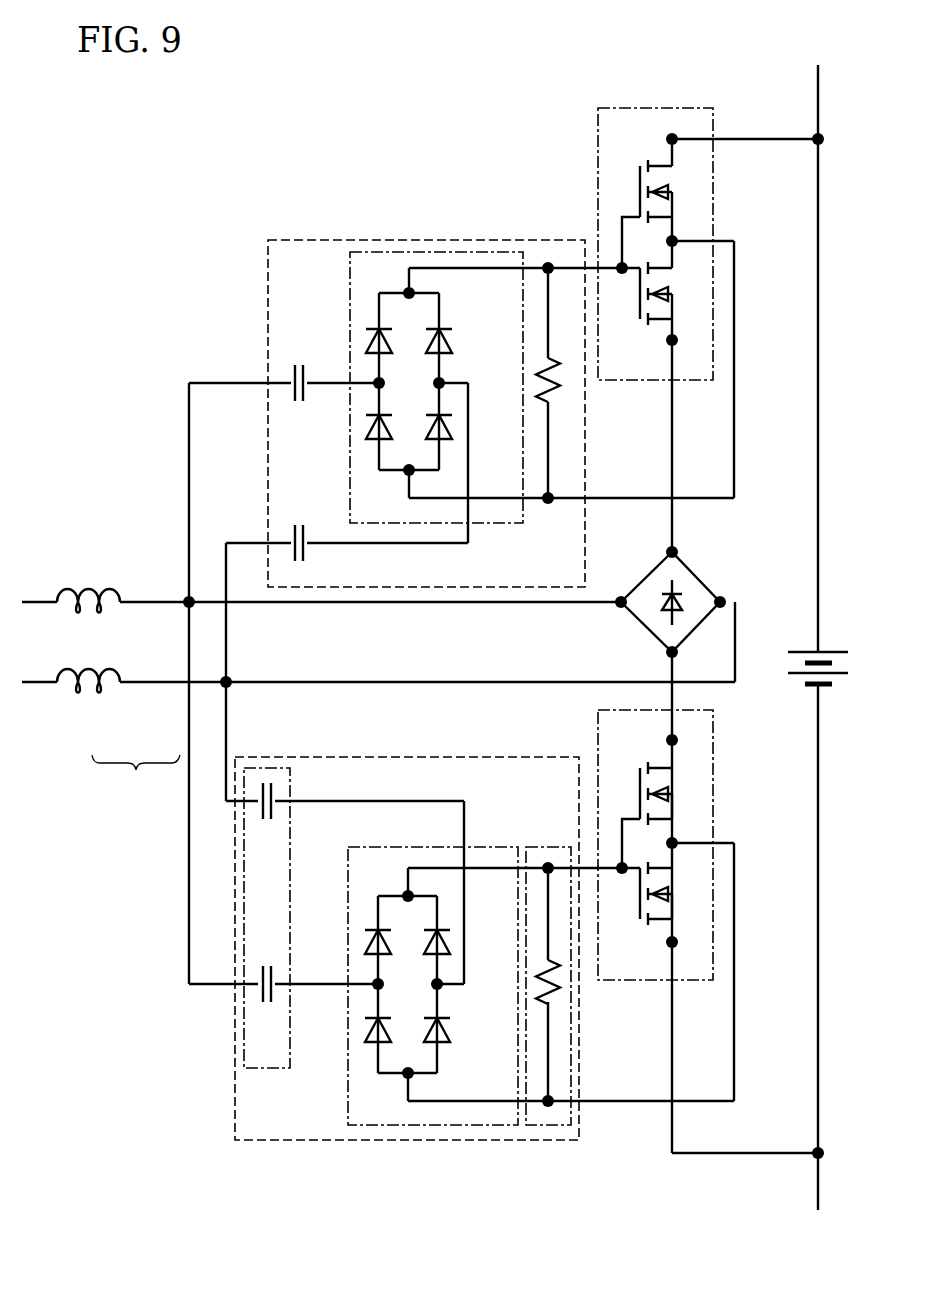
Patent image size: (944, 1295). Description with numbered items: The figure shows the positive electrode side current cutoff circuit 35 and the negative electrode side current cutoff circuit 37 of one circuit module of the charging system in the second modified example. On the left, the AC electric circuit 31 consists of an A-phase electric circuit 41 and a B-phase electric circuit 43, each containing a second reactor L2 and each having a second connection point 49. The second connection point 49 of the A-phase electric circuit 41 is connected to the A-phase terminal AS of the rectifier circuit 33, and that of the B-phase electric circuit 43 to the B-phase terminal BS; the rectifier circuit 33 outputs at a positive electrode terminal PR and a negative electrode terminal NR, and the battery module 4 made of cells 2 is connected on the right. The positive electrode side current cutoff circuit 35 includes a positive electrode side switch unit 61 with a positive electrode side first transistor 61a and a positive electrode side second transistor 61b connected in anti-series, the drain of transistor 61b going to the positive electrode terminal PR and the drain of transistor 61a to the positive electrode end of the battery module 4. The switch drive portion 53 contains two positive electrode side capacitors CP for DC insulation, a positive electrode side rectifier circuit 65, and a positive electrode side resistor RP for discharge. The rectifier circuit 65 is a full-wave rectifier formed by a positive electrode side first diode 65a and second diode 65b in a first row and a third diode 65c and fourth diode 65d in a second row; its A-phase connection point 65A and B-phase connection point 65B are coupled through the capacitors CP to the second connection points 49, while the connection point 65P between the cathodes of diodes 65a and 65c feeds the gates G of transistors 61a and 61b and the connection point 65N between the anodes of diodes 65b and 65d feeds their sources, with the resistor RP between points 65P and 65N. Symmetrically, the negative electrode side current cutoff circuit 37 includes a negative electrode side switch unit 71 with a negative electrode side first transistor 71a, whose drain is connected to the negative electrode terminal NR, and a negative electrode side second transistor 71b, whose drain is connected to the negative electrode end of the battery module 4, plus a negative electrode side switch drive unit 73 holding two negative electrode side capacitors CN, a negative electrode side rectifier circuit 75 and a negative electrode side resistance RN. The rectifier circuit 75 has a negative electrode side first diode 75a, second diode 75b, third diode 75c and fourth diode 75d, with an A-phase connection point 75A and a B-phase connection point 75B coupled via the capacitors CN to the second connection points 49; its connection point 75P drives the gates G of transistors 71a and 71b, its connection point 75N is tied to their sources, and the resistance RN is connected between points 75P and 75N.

The cell 2 is at (850, 672).
The battery module 4 is at (822, 598).
The AC electric circuit 31 is at (136, 778).
The rectifier circuit 33 is at (707, 573).
The positive electrode side current cutoff circuit 35 is at (186, 153).
The negative electrode side current cutoff circuit 37 is at (244, 1153).
The A-phase electric circuit 41 is at (135, 612).
The B-phase electric circuit 43 is at (163, 690).
The second connection point 49 is at (189, 600).
The positive-side rectifier circuit 53 is at (264, 267).
The positive electrode side switch unit 61 is at (713, 126).
The positive electrode side first transistor 61a is at (645, 172).
The positive electrode side second transistor 61b is at (643, 314).
The positive electrode side rectifier circuit 65 is at (476, 253).
The connection point 65P is at (409, 293).
The connection point 65N is at (409, 470).
The A-phase connection point 65A is at (379, 383).
The B-phase connection point 65B is at (441, 383).
The positive electrode side first diode 65a is at (375, 329).
The positive electrode side second diode 65b is at (368, 417).
The positive electrode side third diode 65c is at (444, 329).
The positive electrode side fourth diode 65d is at (447, 415).
The negative electrode side switch unit 71 is at (713, 740).
The negative electrode side first transistor 71a is at (645, 773).
The negative electrode side second transistor 71b is at (643, 916).
The negative electrode side switch drive unit 73 is at (500, 757).
The negative electrode side rectifier circuit 75 is at (487, 847).
The connection point 75P is at (408, 896).
The connection point 75N is at (408, 1073).
The A-phase connection point 75A is at (378, 984).
The B-phase connection point 75B is at (440, 984).
The negative electrode side first diode 75a is at (372, 930).
The negative electrode side second diode 75b is at (368, 1020).
The negative electrode side third diode 75c is at (443, 930).
The negative electrode side fourth diode 75d is at (447, 1018).
The positive electrode side capacitor CP is at (308, 530).
The negative electrode side capacitor CN is at (265, 1025).
The positive electrode side resistor RP is at (553, 400).
The negative electrode side resistance RN is at (553, 1000).
The gate G is at (620, 265).
The second reactor L2 is at (80, 690).
The A-phase terminal AS is at (621, 596).
The B-phase terminal BS is at (726, 600).
The positive electrode terminal PR is at (678, 550).
The negative electrode terminal NR is at (666, 652).